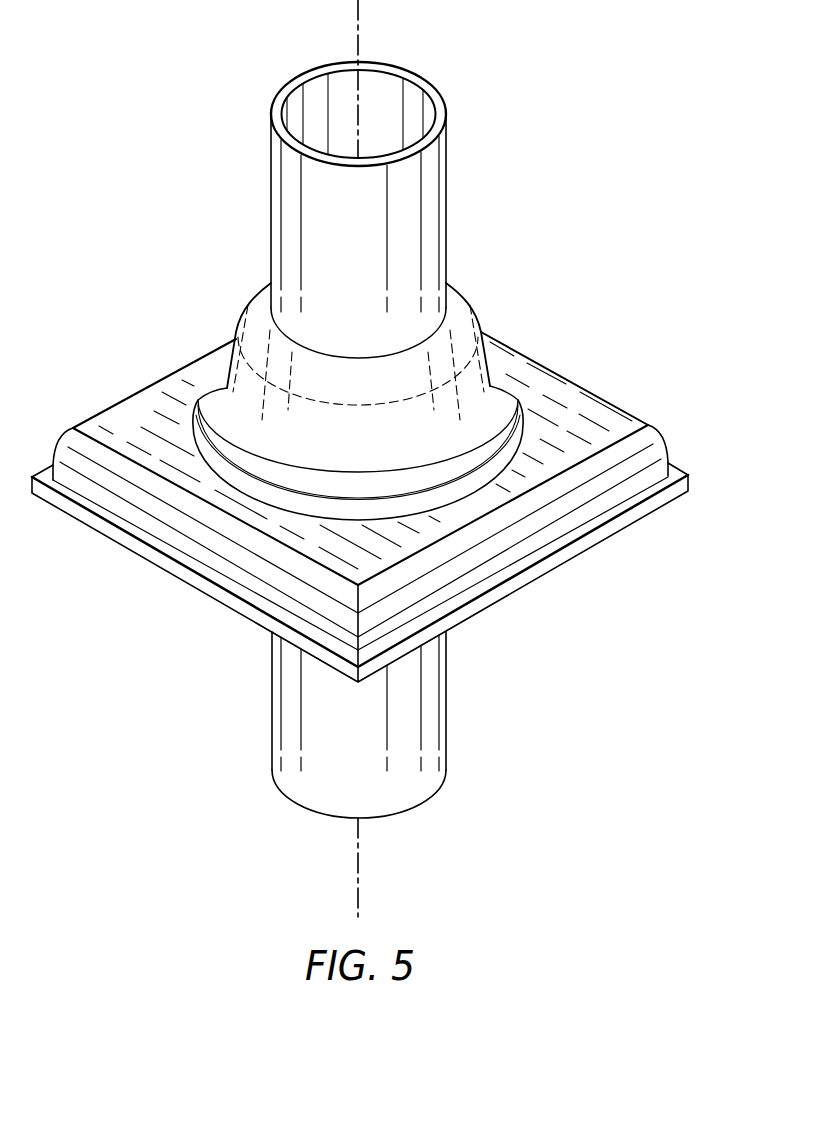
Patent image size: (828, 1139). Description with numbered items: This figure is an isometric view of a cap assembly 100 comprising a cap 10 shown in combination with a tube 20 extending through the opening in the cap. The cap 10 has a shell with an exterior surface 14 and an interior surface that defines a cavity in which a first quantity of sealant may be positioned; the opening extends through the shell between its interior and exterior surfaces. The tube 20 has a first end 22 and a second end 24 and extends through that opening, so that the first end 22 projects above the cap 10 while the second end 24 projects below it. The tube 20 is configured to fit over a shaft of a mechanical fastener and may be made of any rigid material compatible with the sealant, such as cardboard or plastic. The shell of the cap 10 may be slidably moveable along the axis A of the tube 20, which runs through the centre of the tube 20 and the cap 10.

The cap assembly 100 is at (610, 247).
The cap 10 is at (578, 413).
The exterior surface 14 is at (157, 400).
The tube 20 is at (433, 218).
The first end 22 is at (447, 137).
The second end 24 is at (447, 750).
The axis A is at (358, 33).